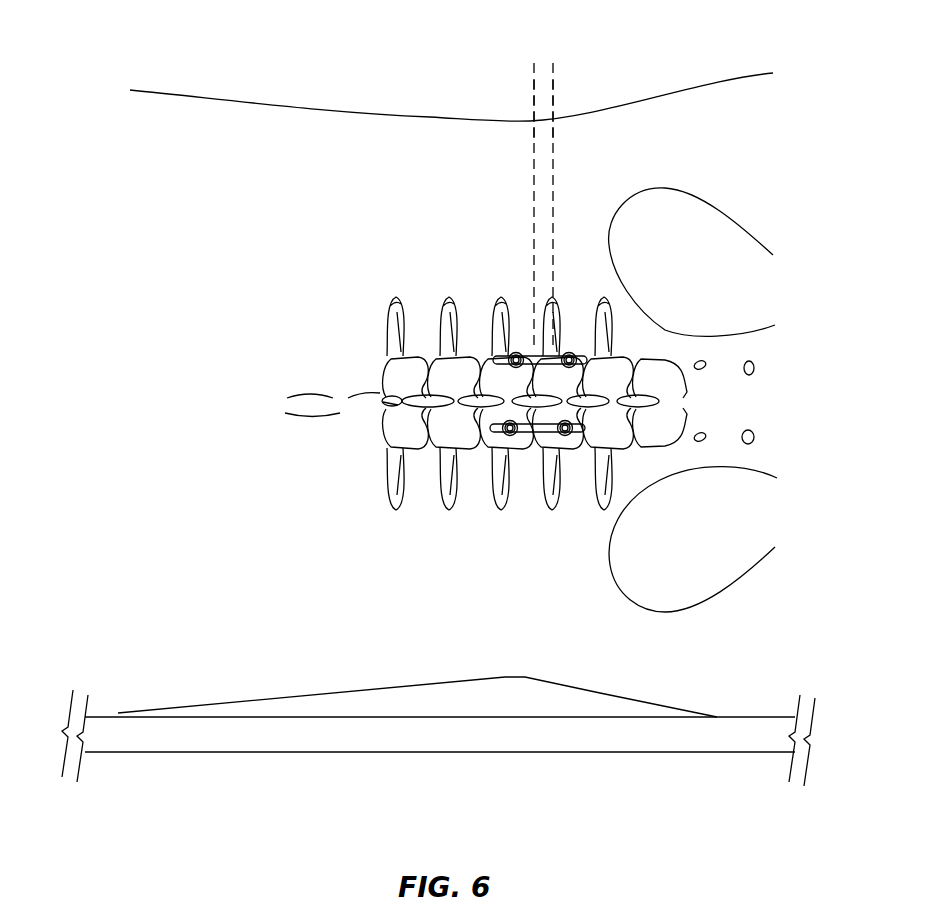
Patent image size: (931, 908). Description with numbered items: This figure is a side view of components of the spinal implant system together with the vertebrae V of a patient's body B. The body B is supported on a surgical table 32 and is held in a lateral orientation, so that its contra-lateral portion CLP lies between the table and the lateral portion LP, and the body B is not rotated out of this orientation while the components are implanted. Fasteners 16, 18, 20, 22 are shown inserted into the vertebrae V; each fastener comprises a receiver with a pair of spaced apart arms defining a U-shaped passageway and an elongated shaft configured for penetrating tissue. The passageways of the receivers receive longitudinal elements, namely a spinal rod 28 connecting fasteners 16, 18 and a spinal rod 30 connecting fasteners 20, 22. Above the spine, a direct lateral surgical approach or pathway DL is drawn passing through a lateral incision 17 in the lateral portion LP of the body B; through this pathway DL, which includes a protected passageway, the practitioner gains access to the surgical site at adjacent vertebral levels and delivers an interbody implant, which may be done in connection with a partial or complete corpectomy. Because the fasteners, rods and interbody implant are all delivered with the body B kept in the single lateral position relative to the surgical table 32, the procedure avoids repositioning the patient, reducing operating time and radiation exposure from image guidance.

The fastener 16 is at (523, 350).
The lateral incision 17 is at (545, 117).
The fastener 18 is at (571, 350).
The fastener 20 is at (500, 436).
The fastener 22 is at (568, 438).
The spinal rod 28 is at (587, 358).
The spinal rod 30 is at (537, 434).
The surgical table 32 is at (137, 740).
The lateral portion LP is at (273, 117).
The direct lateral surgical approach or pathway DL is at (558, 95).
The body B is at (148, 215).
The vertebrae V is at (472, 290).
The contra-lateral portion CLP is at (202, 605).